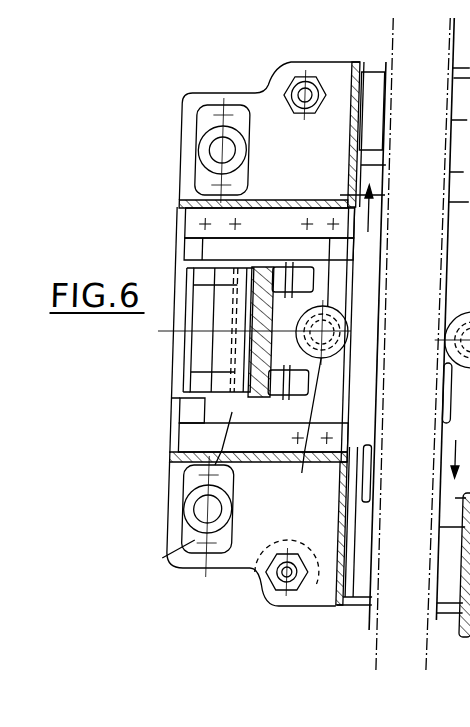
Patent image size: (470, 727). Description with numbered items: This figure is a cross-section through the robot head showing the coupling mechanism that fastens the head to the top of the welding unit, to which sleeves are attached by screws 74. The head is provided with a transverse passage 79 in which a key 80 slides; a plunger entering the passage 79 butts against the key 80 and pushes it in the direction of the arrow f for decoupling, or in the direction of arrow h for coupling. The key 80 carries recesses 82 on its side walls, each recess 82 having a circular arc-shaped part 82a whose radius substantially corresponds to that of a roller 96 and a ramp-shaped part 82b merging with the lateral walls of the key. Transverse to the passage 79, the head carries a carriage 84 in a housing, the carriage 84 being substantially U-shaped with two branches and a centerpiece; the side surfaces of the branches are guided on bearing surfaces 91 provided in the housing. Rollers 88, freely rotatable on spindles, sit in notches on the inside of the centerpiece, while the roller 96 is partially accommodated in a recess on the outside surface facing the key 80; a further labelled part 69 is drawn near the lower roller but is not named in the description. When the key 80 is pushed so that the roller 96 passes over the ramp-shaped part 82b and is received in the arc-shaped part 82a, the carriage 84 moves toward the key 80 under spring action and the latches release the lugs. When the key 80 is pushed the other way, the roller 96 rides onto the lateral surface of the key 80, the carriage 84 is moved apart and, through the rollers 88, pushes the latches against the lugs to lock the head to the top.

The screws 74 is at (211, 136).
The transverse passage 79 is at (350, 511).
The key 80 is at (361, 568).
The recesses 82 is at (358, 438).
The circular arc-shaped part 82a is at (368, 432).
The ramp-shaped part 82b is at (350, 382).
The carriage 84 is at (181, 405).
The rollers 88 is at (300, 287).
The lower pin 69 is at (285, 396).
The bearing surfaces 91 is at (268, 243).
The roller 96 is at (346, 329).